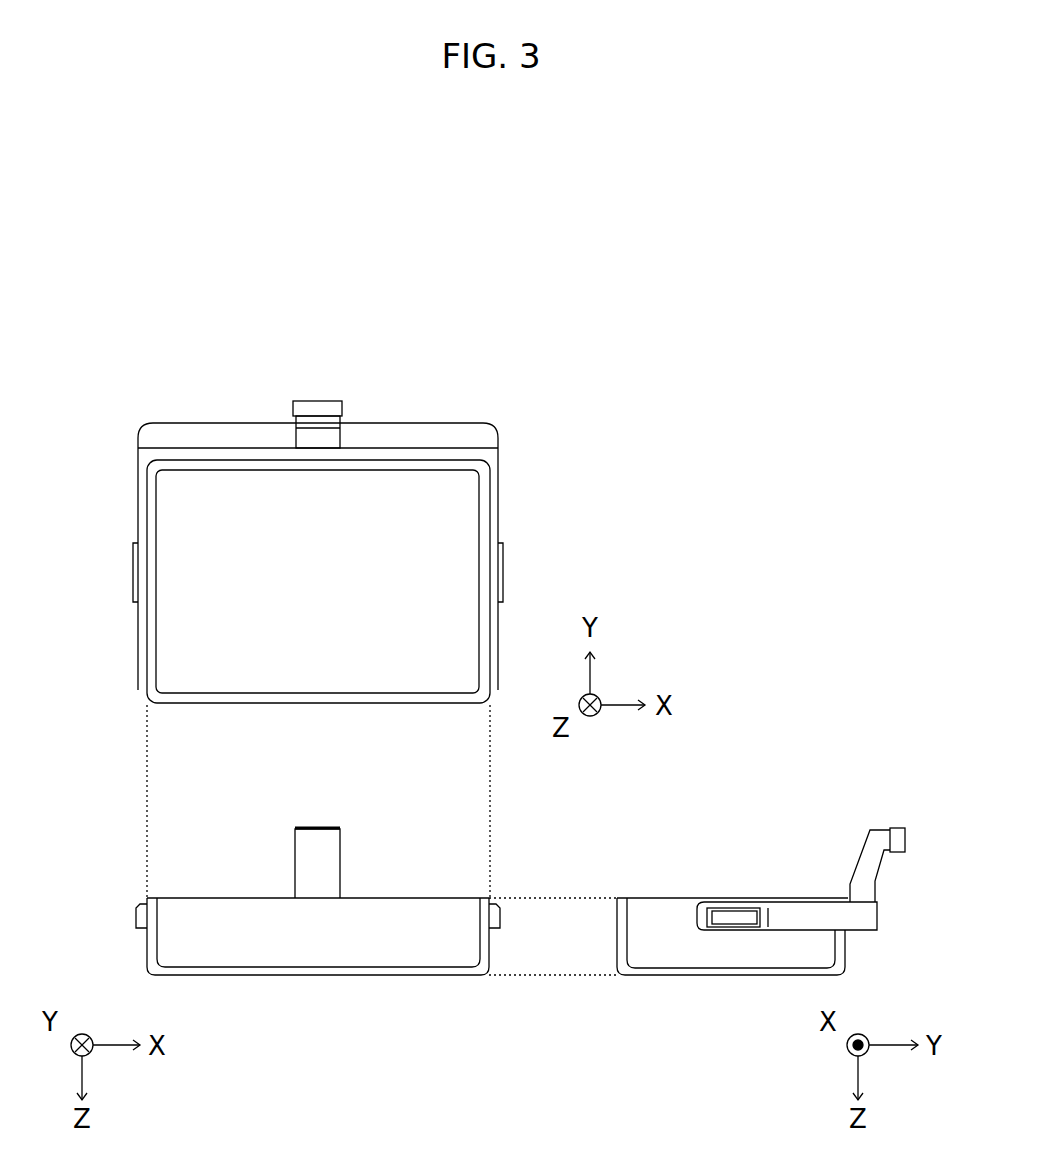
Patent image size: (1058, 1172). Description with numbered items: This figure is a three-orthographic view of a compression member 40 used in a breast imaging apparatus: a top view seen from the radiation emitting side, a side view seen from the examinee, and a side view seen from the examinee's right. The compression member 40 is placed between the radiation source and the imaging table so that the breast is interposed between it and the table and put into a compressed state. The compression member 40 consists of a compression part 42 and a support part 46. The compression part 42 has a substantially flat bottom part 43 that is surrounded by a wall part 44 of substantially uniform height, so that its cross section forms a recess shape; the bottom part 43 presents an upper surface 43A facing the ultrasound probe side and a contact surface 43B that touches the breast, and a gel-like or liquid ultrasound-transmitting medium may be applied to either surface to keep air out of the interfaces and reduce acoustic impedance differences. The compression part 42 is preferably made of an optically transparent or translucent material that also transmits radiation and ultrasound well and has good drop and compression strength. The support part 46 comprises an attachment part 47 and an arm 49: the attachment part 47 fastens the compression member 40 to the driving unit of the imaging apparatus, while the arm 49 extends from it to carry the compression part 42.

The compression member 40 is at (827, 412).
The compression part 42 is at (140, 685).
The bottom part 43 is at (355, 678).
The upper surface 43A is at (417, 968).
The contact surface 43B is at (413, 975).
The wall part 44 is at (200, 703).
The support part 46 is at (508, 507).
The attachment part 47 is at (342, 408).
The arm 49 is at (498, 577).